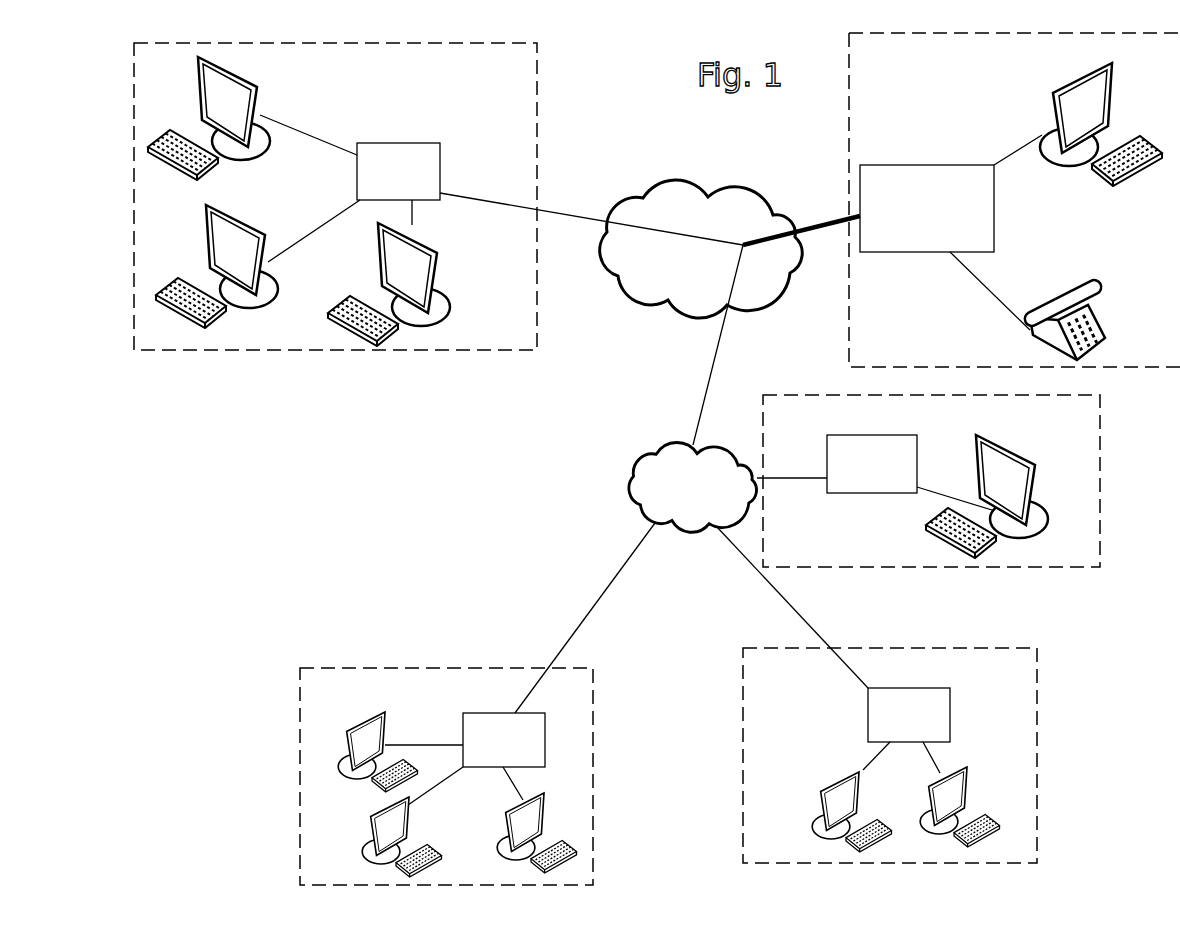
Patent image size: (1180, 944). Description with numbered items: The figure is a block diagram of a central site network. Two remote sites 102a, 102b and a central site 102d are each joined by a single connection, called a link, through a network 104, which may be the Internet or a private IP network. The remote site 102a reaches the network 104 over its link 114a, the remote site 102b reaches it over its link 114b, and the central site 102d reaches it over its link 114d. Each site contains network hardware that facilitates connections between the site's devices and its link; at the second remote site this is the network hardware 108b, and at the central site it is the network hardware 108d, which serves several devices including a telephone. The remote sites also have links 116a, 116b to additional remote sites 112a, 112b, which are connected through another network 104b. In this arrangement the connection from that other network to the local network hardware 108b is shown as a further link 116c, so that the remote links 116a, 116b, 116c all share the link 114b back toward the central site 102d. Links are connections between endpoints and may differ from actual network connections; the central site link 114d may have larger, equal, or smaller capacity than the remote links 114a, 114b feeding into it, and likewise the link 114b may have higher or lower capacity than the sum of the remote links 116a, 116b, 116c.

The remote site 102a is at (335, 196).
The remote site 102b is at (931, 481).
The central site 102d is at (1014, 200).
The network 104 is at (701, 249).
The network 104b is at (693, 488).
The network hardware 108b is at (909, 472).
The network hardware 108d is at (951, 232).
The additional remote site 112a is at (446, 776).
The additional remote site 112b is at (890, 755).
The link 114a is at (591, 213).
The link 114b is at (729, 345).
The link 114d is at (801, 218).
The link 116a is at (585, 618).
The link 116b is at (792, 607).
The link 116c is at (792, 466).